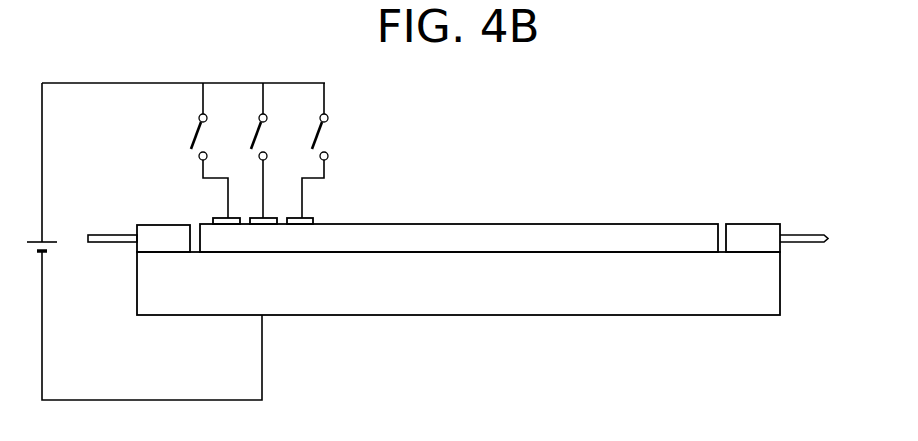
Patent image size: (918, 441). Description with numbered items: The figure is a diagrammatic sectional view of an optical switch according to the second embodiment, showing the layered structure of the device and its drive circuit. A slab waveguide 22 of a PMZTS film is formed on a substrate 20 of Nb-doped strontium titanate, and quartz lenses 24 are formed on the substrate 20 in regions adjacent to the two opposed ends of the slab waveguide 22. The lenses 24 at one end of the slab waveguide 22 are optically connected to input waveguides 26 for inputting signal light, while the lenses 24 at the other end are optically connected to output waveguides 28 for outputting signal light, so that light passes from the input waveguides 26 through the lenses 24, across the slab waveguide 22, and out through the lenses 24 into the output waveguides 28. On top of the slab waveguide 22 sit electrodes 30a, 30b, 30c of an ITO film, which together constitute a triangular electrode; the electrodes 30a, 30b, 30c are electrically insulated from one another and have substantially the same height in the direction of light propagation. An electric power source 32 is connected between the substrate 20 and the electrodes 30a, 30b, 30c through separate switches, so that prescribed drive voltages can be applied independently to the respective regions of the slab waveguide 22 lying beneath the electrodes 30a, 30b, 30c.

The substrate 20 is at (775, 287).
The slab waveguide 22 is at (622, 233).
The lenses 24 is at (158, 232).
The input waveguides 26 is at (106, 236).
The output waveguides 28 is at (810, 233).
The electrode 30a is at (220, 215).
The electrode 30b is at (267, 215).
The electrode 30c is at (307, 215).
The electric power source 32 is at (50, 255).